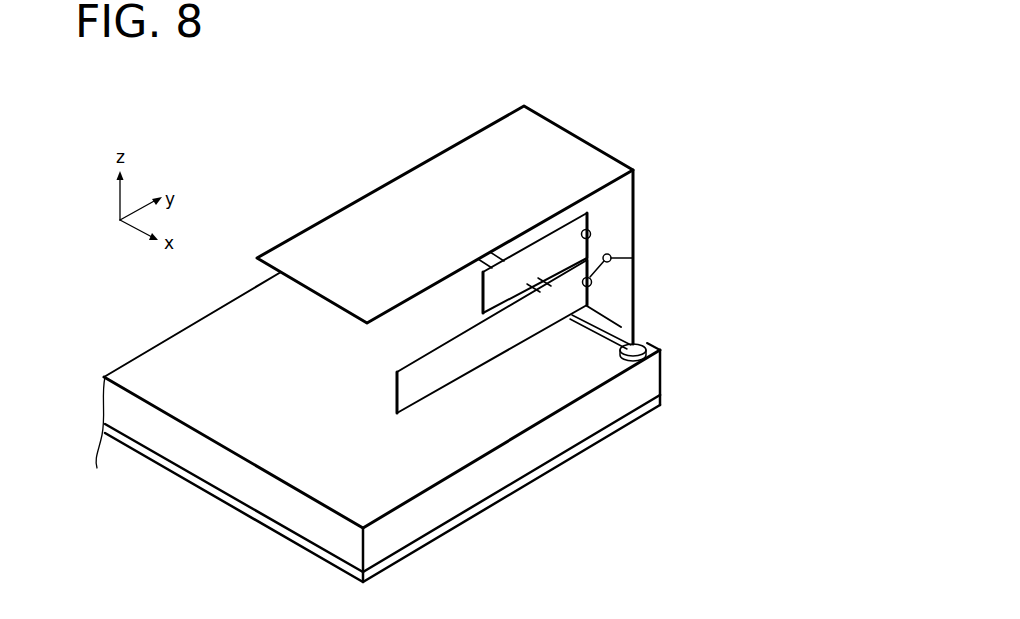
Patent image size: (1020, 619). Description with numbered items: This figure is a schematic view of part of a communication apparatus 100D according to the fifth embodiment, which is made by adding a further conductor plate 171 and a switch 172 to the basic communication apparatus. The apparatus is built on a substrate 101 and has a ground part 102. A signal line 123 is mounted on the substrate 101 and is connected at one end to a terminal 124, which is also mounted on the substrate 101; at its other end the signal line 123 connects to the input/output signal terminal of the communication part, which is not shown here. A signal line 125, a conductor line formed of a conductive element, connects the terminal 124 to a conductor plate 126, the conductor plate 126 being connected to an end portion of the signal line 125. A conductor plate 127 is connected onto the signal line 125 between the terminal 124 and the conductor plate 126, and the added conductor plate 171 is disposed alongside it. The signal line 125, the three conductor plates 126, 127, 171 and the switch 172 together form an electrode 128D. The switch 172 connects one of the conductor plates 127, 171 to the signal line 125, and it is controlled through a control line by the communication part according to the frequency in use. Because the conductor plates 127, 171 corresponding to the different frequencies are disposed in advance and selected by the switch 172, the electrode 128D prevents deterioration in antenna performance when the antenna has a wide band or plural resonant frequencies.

The communication apparatus 100D is at (315, 170).
The substrate 101 is at (366, 553).
The ground part 102 is at (173, 478).
The signal line 123 is at (573, 318).
The terminal 124 is at (650, 347).
The signal line 125 is at (687, 253).
The conductor plate 126 is at (556, 126).
The conductor plate 127 is at (569, 249).
The electrode 128D is at (742, 58).
The conductor plate 171 is at (649, 175).
The switch 172 is at (662, 212).